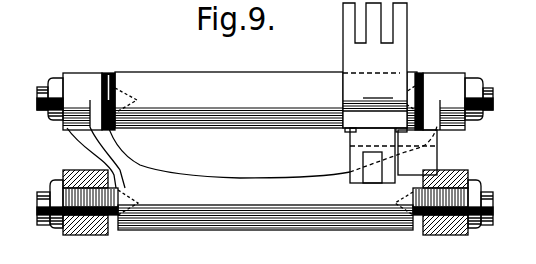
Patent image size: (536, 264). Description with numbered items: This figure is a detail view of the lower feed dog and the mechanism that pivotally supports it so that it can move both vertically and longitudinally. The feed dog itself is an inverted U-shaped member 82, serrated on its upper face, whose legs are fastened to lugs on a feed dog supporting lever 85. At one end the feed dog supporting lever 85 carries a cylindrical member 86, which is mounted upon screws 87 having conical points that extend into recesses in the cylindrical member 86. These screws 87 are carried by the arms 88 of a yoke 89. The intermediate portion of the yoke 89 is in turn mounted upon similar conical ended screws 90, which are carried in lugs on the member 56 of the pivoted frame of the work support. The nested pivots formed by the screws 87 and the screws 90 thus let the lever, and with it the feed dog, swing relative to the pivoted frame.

The member of the pivoted frame 56 is at (72, 170).
The inverted U-shaped member 82 is at (402, 45).
The feed dog supporting lever 85 is at (440, 153).
The cylindrical member 86 is at (293, 80).
The screws 87 is at (108, 84).
The arms 88 is at (82, 80).
The yoke 89 is at (253, 181).
The conical ended screws 90 is at (116, 188).